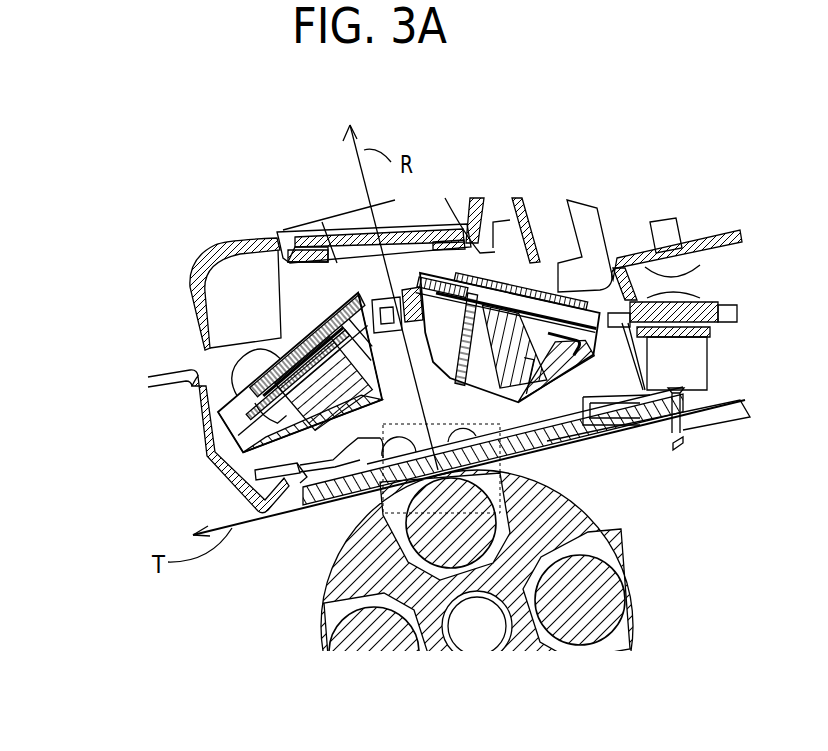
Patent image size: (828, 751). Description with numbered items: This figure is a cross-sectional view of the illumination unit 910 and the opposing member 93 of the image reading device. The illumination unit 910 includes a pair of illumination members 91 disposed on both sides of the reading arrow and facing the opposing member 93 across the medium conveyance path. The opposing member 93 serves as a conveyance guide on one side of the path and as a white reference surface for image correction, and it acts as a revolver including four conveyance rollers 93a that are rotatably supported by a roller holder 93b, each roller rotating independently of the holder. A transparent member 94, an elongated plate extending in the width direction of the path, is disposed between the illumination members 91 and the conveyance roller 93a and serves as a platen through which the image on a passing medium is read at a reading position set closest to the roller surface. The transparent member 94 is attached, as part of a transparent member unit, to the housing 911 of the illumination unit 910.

The illumination member 91 is at (272, 342).
The illumination unit 910 is at (165, 325).
The housing 911 is at (202, 424).
The transparent member 94 is at (228, 486).
The opposing member 93 is at (305, 620).
The conveyance roller 93a is at (478, 538).
The roller holder 93b is at (362, 565).